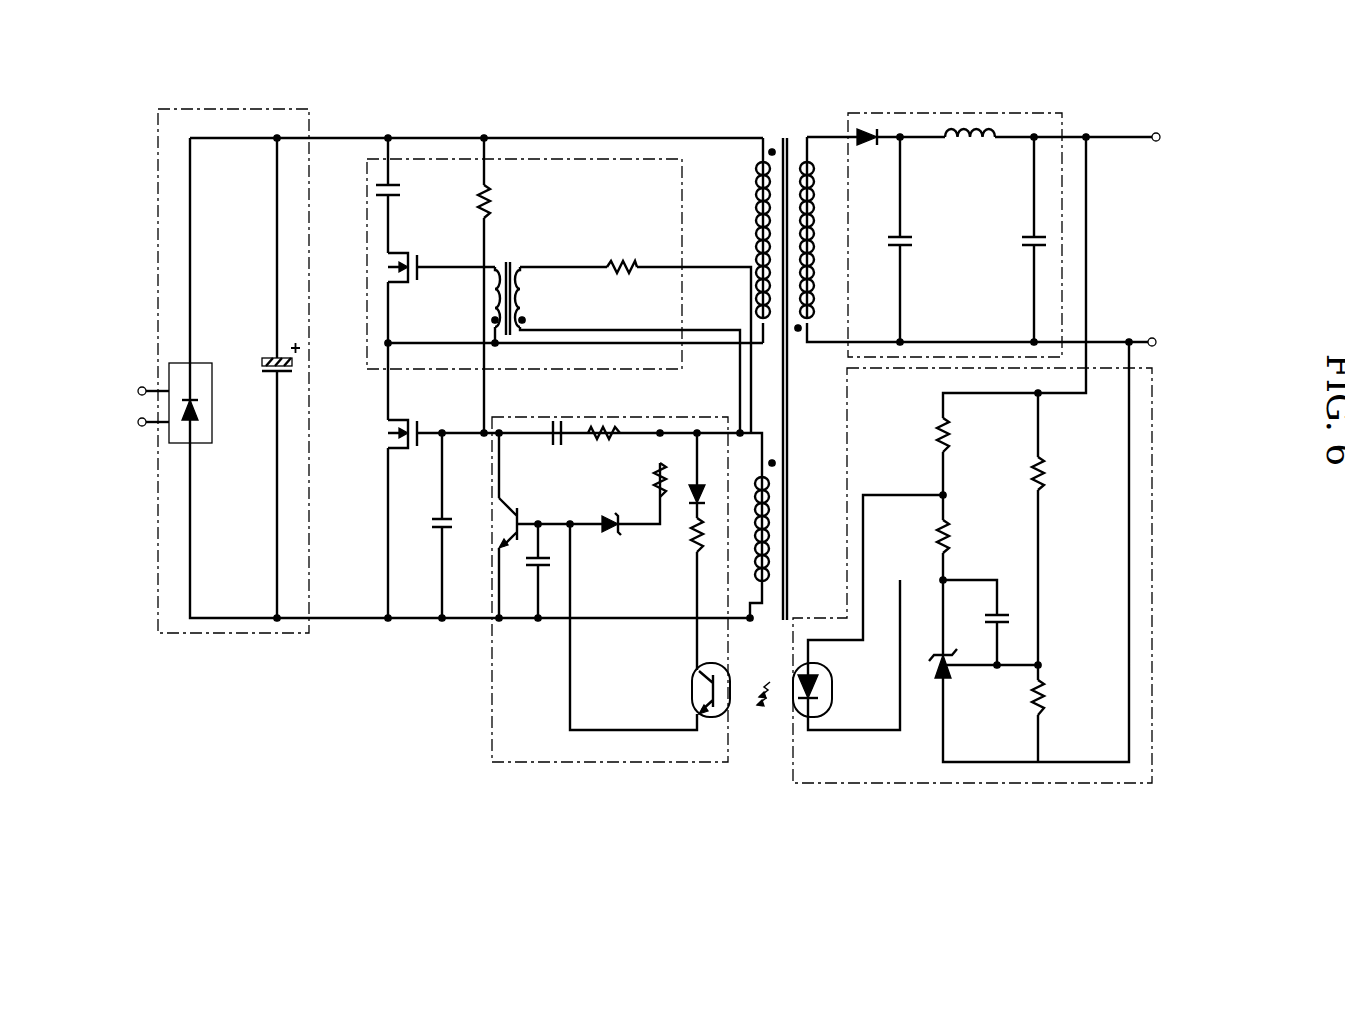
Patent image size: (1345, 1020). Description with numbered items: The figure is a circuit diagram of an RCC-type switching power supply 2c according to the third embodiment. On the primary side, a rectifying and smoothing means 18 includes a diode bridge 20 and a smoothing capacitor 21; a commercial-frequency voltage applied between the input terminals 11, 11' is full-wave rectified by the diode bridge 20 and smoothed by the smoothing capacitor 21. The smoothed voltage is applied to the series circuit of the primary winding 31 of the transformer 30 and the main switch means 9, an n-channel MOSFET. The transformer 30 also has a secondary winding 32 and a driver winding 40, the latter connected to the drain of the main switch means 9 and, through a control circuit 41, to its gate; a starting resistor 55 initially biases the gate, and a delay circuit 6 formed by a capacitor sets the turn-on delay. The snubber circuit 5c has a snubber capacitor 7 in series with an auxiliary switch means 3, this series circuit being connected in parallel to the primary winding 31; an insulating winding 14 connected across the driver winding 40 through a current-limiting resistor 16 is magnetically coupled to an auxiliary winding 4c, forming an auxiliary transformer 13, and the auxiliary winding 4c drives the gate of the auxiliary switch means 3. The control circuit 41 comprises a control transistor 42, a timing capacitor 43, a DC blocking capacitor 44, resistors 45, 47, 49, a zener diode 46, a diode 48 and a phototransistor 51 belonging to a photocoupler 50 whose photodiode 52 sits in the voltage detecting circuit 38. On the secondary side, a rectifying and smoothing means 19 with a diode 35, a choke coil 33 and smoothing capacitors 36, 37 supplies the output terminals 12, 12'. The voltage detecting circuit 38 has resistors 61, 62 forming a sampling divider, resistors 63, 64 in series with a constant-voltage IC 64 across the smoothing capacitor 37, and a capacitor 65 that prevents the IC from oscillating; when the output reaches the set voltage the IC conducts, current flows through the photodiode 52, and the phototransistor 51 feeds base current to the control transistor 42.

The RCC-type switching power supply 2c is at (204, 64).
The rectifying and smoothing means 18 is at (278, 108).
The diode bridge 20 is at (175, 445).
The smoothing capacitor 21 is at (268, 372).
The input terminal 11 is at (131, 366).
The input terminal 11' is at (126, 445).
The auxiliary switch means 3 is at (380, 273).
The main switch means 9 is at (388, 431).
The snubber capacitor 7 is at (404, 190).
The starting resistor 55 is at (492, 200).
The snubber circuit 5c is at (683, 187).
The auxiliary transformer 13 is at (510, 274).
The auxiliary winding 4c is at (492, 300).
The insulating winding 14 is at (525, 298).
The resistor 16 is at (622, 265).
The delay circuit 6 is at (428, 523).
The transformer 30 is at (791, 341).
The primary winding 31 is at (752, 231).
The secondary winding 32 is at (815, 215).
The driver winding 40 is at (770, 553).
The rectifying and smoothing means 19 is at (1057, 108).
The diode 35 is at (868, 122).
The choke coil 33 is at (972, 118).
The smoothing capacitor 36 is at (894, 244).
The smoothing capacitor 37 is at (1025, 241).
The output terminal 12 is at (1190, 130).
The output terminal 12' is at (1188, 335).
The voltage detecting circuit 38 is at (1085, 785).
The resistor 63 is at (948, 440).
The resistor / constant-voltage IC 64 is at (950, 538).
The resistor 61 is at (1047, 476).
The capacitor 65 is at (1006, 614).
The resistor 62 is at (1048, 699).
The control circuit 41 is at (492, 696).
The control transistor 42 is at (504, 520).
The timing capacitor 43 is at (555, 563).
The DC blocking capacitor 44 is at (557, 447).
The resistor 45 is at (606, 447).
The zener diode 46 is at (613, 530).
The resistor 47 is at (662, 497).
The diode 48 is at (705, 490).
The resistor 49 is at (701, 556).
The photocoupler 50 is at (762, 765).
The phototransistor 51 is at (721, 722).
The photodiode 52 is at (805, 722).